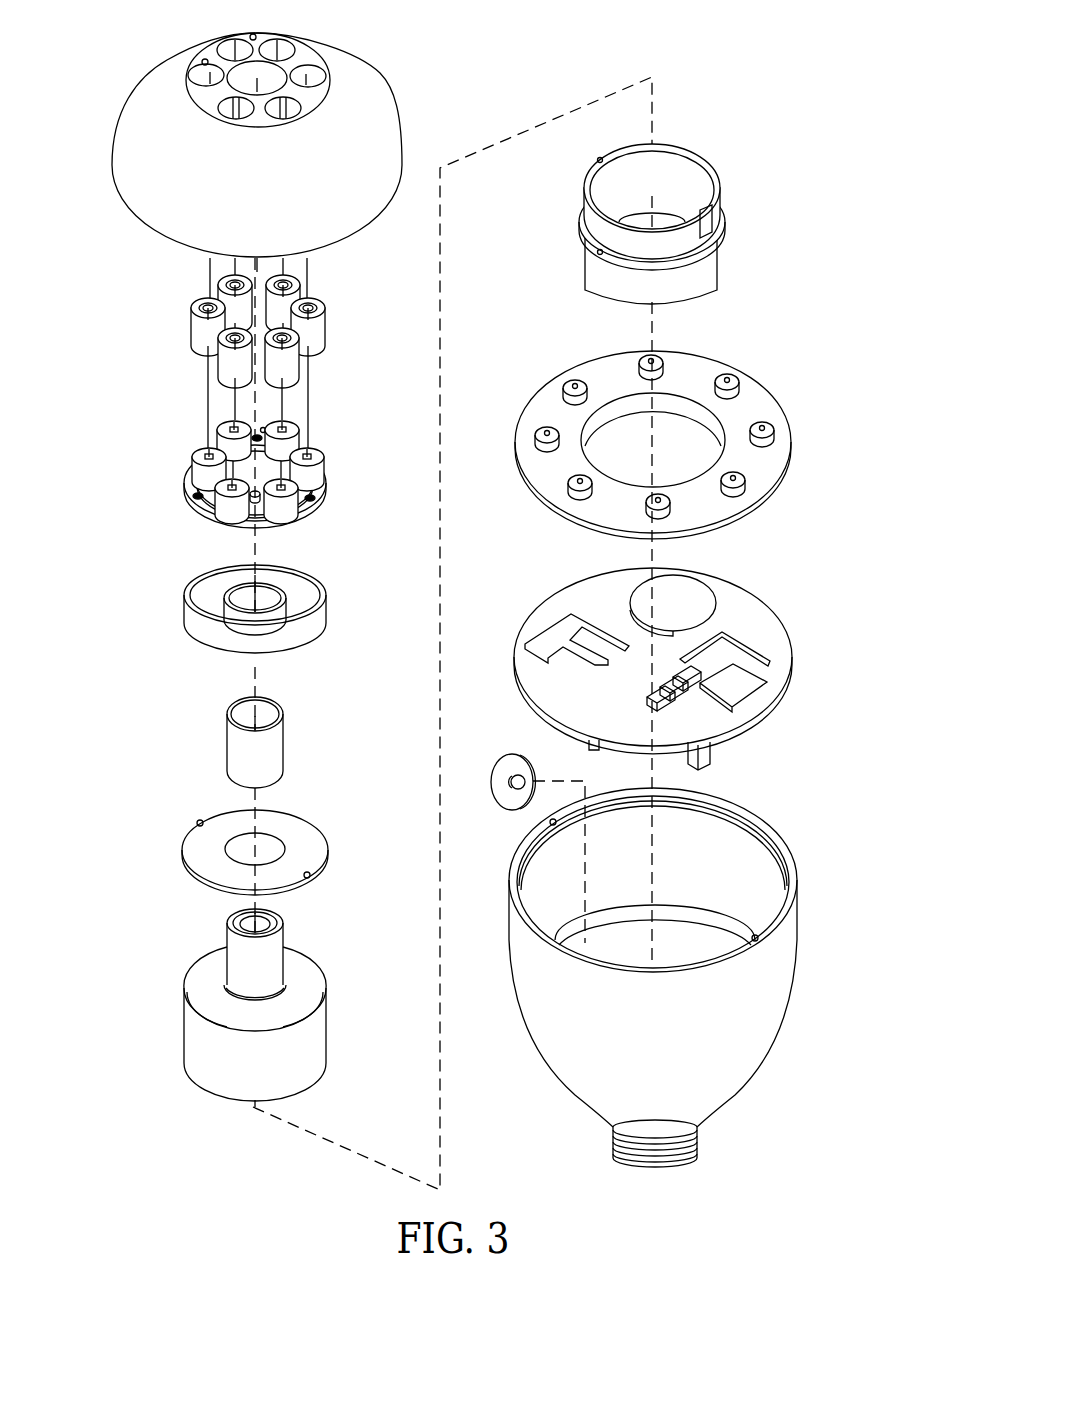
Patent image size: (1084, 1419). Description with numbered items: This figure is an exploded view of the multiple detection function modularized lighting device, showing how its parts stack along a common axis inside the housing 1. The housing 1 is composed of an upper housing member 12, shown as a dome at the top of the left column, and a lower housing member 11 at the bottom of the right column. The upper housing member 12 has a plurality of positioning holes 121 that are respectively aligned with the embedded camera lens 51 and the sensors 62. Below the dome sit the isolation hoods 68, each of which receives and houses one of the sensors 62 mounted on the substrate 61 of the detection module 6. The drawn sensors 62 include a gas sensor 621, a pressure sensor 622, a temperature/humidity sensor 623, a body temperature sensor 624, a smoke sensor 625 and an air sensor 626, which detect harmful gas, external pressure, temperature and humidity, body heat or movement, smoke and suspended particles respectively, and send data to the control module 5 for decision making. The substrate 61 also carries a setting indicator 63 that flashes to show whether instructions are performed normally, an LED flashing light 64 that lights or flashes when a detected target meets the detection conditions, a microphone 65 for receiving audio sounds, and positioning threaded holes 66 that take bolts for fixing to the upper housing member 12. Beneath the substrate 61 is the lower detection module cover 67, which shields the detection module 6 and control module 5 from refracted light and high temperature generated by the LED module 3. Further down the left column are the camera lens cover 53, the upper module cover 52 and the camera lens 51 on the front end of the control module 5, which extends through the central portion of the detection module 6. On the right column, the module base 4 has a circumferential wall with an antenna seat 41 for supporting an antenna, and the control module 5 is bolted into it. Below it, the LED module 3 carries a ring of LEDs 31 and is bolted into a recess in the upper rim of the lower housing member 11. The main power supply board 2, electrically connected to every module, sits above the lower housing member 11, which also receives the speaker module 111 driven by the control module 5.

The housing 1 is at (664, 960).
The lower housing member 11 is at (727, 1093).
The speaker module 111 is at (502, 812).
The upper housing member 12 is at (143, 97).
The positioning holes 121 is at (280, 40).
The main power supply board 2 is at (757, 722).
The LED module 3 is at (664, 417).
The LEDs 31 is at (730, 377).
The module base 4 is at (694, 218).
The antenna seat 41 is at (713, 167).
The control module 5 is at (215, 1005).
The camera lens 51 is at (223, 920).
The upper module cover 52 is at (182, 857).
The camera lens cover 53 is at (232, 752).
The detection module 6 is at (258, 472).
The substrate 61 is at (310, 508).
The sensors 62 is at (265, 472).
The gas sensor 621 is at (233, 425).
The pressure sensor 622 is at (178, 450).
The temperature/humidity sensor 623 is at (200, 496).
The body temperature sensor 624 is at (292, 425).
The smoke sensor 625 is at (307, 462).
The air sensor 626 is at (282, 493).
The setting indicator 63 is at (212, 455).
The LED flashing light 64 is at (255, 498).
The microphone 65 is at (263, 430).
The positioning threaded holes 66 is at (322, 488).
The lower detection module cover 67 is at (208, 635).
The isolation hoods 68 is at (200, 330).